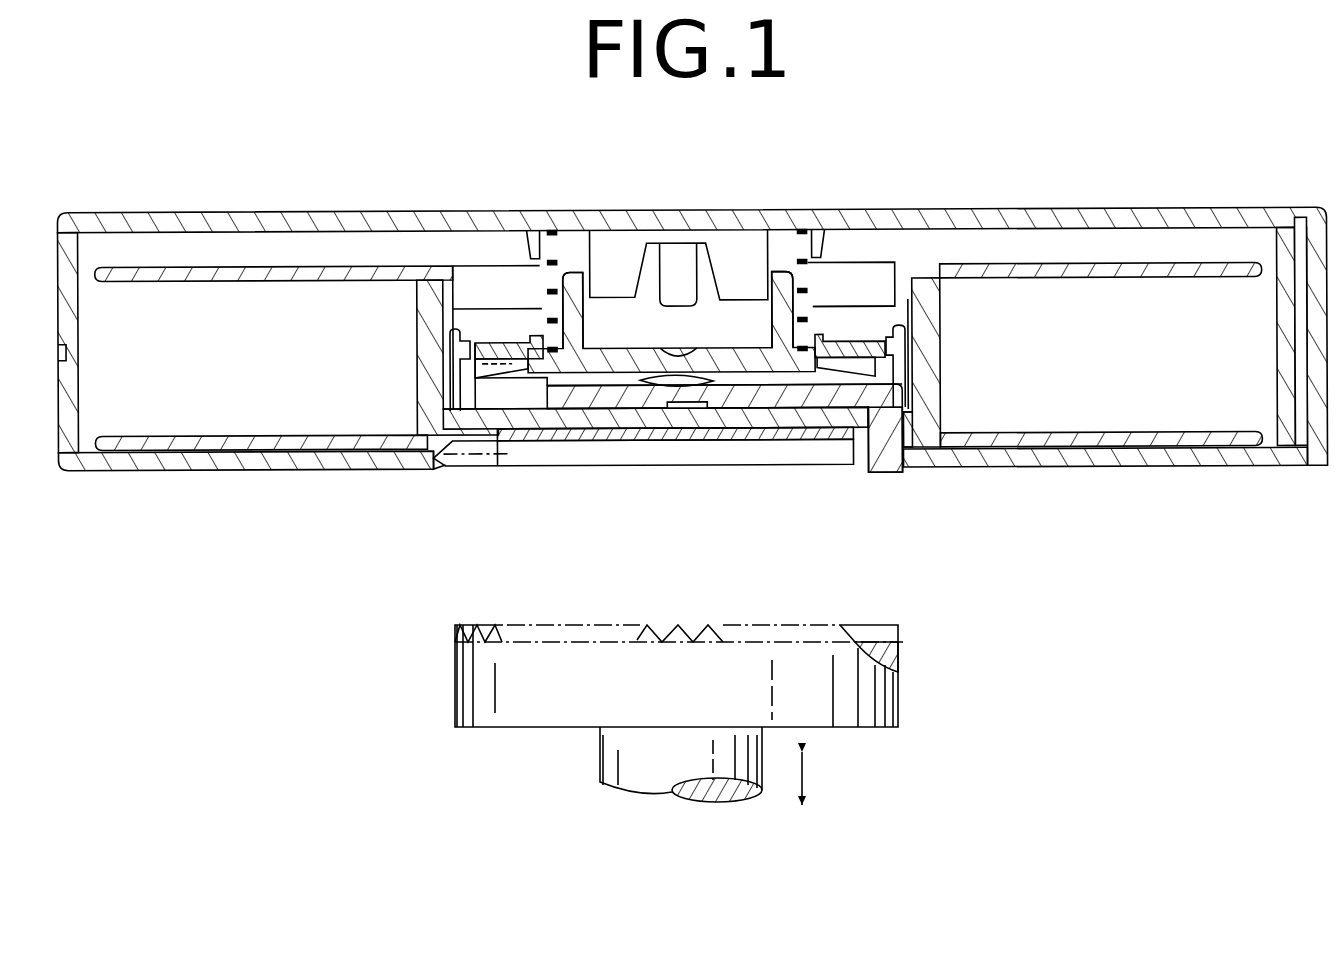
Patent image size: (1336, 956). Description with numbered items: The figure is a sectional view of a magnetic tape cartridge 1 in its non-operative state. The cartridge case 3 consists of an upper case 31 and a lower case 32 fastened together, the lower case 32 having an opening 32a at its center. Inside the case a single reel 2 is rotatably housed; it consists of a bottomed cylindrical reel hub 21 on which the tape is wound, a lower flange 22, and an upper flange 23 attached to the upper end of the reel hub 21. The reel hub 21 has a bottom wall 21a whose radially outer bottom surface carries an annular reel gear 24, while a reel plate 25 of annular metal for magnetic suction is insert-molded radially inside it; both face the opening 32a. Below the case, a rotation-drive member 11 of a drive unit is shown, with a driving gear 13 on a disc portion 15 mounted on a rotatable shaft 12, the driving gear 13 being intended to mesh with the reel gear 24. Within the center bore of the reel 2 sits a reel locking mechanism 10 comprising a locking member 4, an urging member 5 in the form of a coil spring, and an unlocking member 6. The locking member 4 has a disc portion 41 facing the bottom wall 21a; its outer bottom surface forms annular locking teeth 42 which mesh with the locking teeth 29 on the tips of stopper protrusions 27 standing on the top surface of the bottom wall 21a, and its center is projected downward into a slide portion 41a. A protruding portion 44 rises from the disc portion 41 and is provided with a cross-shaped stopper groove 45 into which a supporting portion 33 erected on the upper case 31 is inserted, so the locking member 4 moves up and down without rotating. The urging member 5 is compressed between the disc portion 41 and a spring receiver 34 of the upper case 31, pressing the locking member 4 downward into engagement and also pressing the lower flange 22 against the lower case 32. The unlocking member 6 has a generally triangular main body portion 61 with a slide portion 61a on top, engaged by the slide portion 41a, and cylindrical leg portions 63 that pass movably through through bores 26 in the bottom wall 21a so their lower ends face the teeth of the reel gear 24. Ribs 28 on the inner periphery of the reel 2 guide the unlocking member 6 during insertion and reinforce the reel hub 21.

The magnetic tape cartridge 1 is at (279, 143).
The reel 2 is at (297, 260).
The cartridge case 3 is at (1128, 208).
The locking member 4 is at (520, 330).
The urging member 5 is at (809, 283).
The unlocking member 6 is at (676, 412).
The reel locking mechanism 10 is at (848, 305).
The rotation-drive member 11 is at (452, 682).
The rotatable shaft 12 is at (600, 748).
The driving gear 13 is at (652, 626).
The disc portion 15 is at (895, 698).
The reel hub 21 is at (940, 310).
The bottom wall 21a is at (728, 430).
The lower flange 22 is at (1130, 433).
The upper flange 23 is at (1155, 268).
The reel gear 24 is at (466, 463).
The reel plate 25 is at (530, 440).
The through bores 26 is at (912, 413).
The stopper protrusions 27 is at (470, 392).
The ribs 28 is at (467, 343).
The locking teeth 29 is at (480, 366).
The upper case 31 is at (215, 212).
The lower case 32 is at (195, 471).
The opening 32a is at (432, 468).
The supporting portion 33 is at (678, 267).
The spring receiver 34 is at (527, 235).
The disc portion 41 is at (603, 374).
The slide portion 41a is at (690, 378).
The locking teeth 42 is at (450, 345).
The protruding portion 44 is at (563, 280).
The stopper groove 45 is at (758, 323).
The main body portion 61 is at (805, 400).
The slide portion 61a is at (670, 410).
The leg portions 63 is at (886, 472).